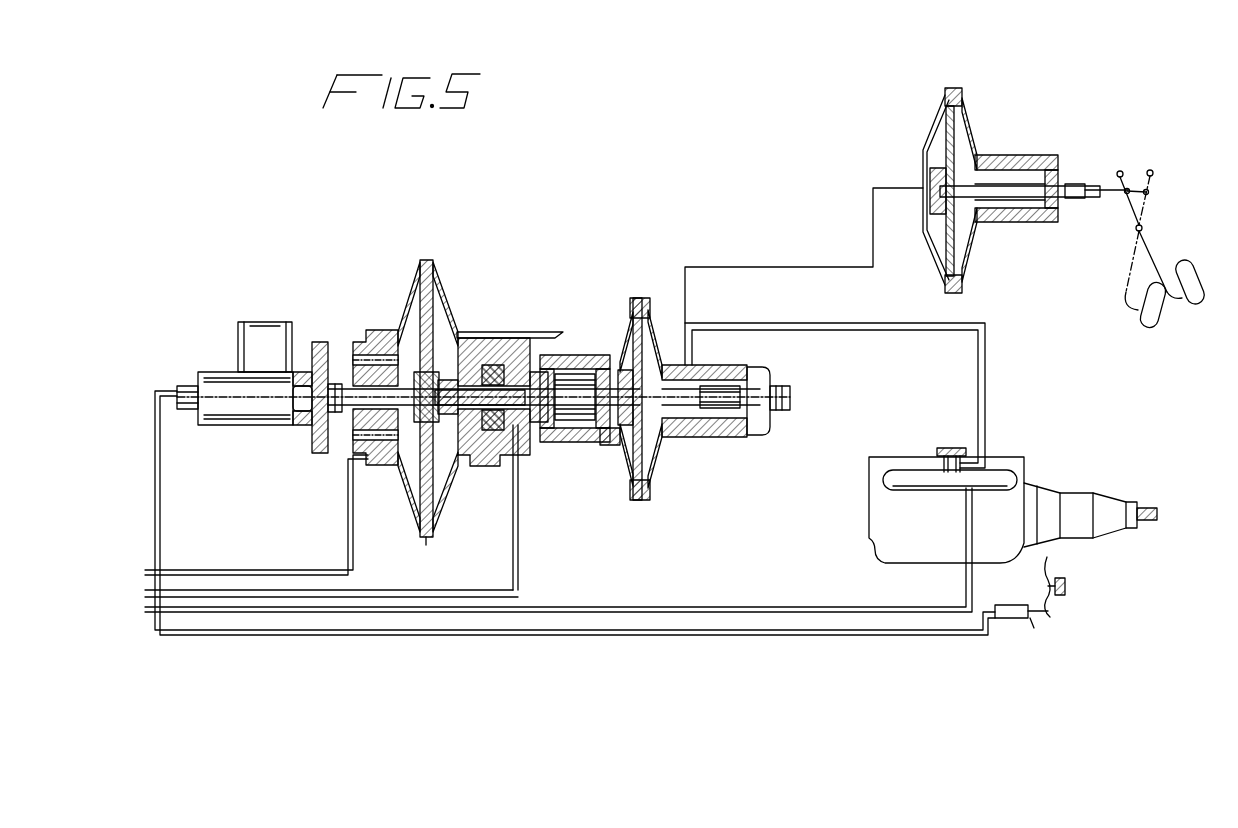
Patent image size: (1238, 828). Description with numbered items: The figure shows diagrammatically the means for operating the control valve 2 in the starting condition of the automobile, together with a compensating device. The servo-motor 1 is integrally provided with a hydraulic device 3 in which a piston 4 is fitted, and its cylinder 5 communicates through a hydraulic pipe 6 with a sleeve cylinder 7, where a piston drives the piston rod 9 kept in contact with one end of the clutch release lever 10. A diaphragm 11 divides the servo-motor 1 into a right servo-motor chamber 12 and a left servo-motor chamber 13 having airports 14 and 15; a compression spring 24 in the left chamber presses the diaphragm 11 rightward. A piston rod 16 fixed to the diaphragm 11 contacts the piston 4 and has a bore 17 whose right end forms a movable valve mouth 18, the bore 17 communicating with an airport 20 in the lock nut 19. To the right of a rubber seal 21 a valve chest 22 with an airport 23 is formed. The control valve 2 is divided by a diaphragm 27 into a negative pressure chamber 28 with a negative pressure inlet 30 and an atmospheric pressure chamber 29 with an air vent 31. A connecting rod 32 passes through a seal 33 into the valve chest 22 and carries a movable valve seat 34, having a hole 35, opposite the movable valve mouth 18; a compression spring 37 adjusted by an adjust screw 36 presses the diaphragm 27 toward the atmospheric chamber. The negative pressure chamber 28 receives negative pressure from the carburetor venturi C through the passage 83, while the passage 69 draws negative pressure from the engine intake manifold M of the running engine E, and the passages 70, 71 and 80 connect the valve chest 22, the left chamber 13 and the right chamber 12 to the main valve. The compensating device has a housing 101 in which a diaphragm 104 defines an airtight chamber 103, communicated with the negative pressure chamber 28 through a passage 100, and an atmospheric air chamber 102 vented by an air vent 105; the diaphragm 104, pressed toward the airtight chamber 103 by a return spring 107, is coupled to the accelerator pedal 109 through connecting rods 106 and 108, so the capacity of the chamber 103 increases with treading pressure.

The servo-motor 1 is at (428, 540).
The control valve 2 is at (644, 500).
The hydraulic device 3 is at (228, 428).
The piston 4 is at (317, 430).
The cylinder 5 is at (300, 398).
The hydraulic pipe 6 is at (162, 462).
The sleeve cylinder 7 is at (1010, 605).
The piston rod 9 is at (1034, 630).
The clutch release lever 10 is at (1052, 566).
The diaphragm 11 is at (414, 500).
The right servo-motor chamber 12 is at (436, 300).
The left servo-motor chamber 13 is at (398, 475).
The airport 14 is at (490, 340).
The airport 15 is at (356, 458).
The piston rod 16 is at (352, 372).
The bore 17 is at (472, 458).
The movable valve mouth 18 is at (520, 425).
The lock nut 19 is at (446, 470).
The airport 20 is at (448, 340).
The rubber seal 21 is at (497, 368).
The valve chest 22 is at (576, 385).
The airport 23 is at (514, 462).
The compression spring 24 is at (408, 322).
The diaphragm 27 is at (660, 450).
The negative pressure chamber 28 is at (654, 338).
The atmospheric pressure chamber 29 is at (630, 470).
The negative pressure inlet 30 is at (700, 366).
The air vent 31 is at (606, 447).
The connecting rod 32 is at (576, 430).
The seal 33 is at (622, 375).
The movable valve seat 34 is at (552, 442).
The hole 35 is at (546, 360).
The adjust screw 36 is at (780, 414).
The compression spring 37 is at (700, 438).
The passage 69 is at (600, 607).
The passage 70 is at (388, 592).
The passage 71 is at (300, 572).
The passage 80 is at (530, 334).
The passage 83 is at (902, 331).
The passage 100 is at (775, 267).
The housing 101 is at (965, 283).
The atmospheric air chamber 102 is at (978, 238).
The airtight chamber 103 is at (936, 244).
The diaphragm 104 is at (952, 125).
The air vent 105 is at (1000, 156).
The connecting rod 106 is at (1062, 184).
The return spring 107 is at (1035, 212).
The connecting rod 108 is at (1112, 194).
The accelerator pedal 109 is at (1190, 265).
The carburetor venturi C is at (951, 448).
The engine intake manifold M is at (1002, 468).
The engine E is at (868, 515).